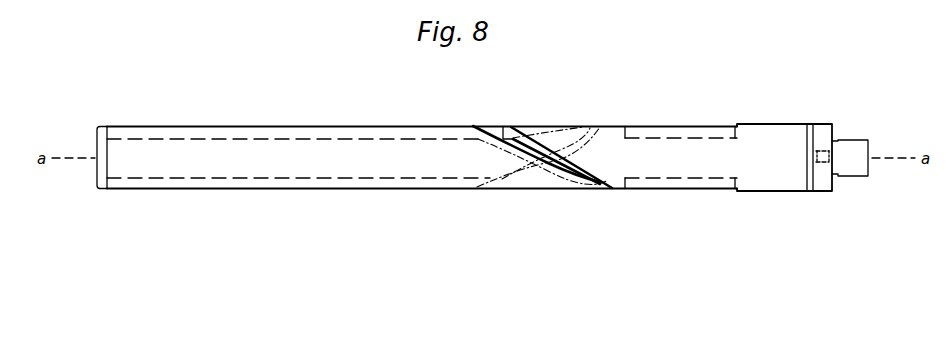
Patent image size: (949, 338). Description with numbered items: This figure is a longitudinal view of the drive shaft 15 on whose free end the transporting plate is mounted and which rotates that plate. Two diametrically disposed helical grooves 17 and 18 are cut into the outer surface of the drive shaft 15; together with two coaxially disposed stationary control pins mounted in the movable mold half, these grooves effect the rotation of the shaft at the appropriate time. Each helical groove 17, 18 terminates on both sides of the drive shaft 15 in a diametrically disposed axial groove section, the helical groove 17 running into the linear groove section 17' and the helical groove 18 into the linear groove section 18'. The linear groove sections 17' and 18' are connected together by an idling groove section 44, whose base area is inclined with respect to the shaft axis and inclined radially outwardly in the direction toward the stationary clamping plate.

The drive shaft 15 is at (783, 135).
The helical groove 17 is at (605, 189).
The axial groove section 17' is at (357, 125).
The helical groove 18 is at (356, 159).
The axial groove section 18' is at (681, 102).
The idling groove section 44 is at (528, 126).